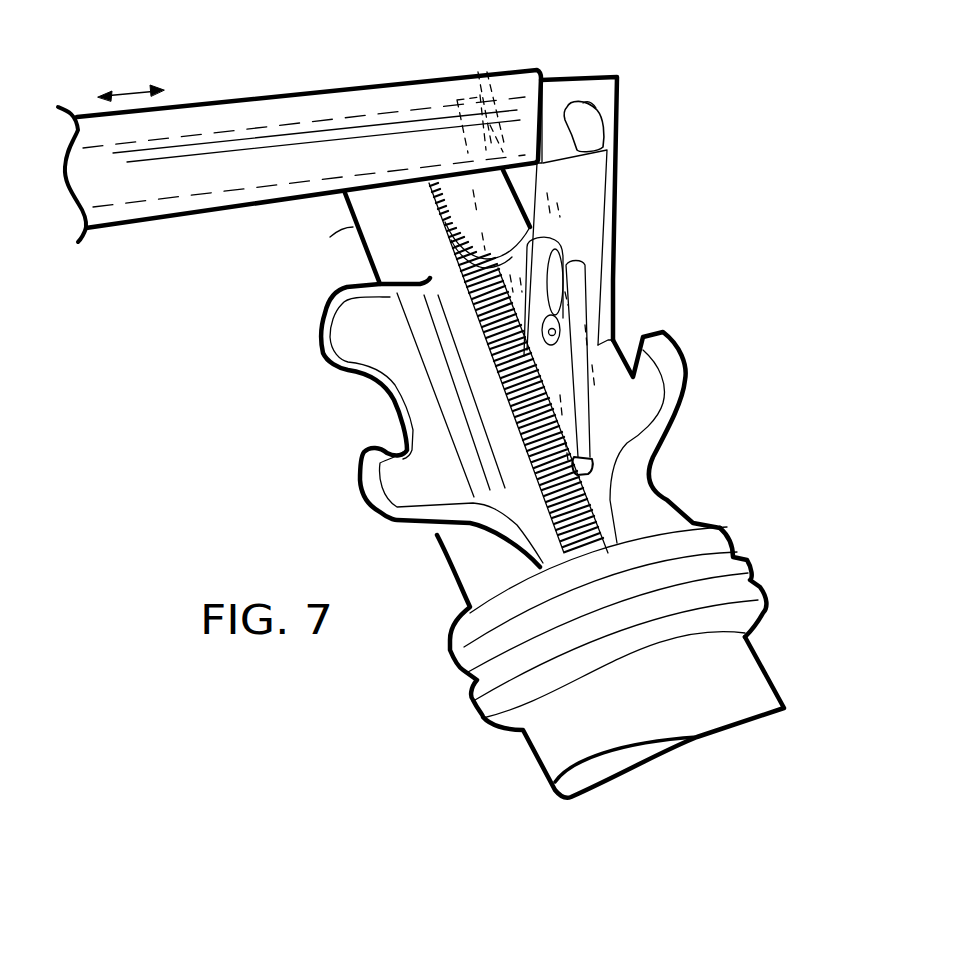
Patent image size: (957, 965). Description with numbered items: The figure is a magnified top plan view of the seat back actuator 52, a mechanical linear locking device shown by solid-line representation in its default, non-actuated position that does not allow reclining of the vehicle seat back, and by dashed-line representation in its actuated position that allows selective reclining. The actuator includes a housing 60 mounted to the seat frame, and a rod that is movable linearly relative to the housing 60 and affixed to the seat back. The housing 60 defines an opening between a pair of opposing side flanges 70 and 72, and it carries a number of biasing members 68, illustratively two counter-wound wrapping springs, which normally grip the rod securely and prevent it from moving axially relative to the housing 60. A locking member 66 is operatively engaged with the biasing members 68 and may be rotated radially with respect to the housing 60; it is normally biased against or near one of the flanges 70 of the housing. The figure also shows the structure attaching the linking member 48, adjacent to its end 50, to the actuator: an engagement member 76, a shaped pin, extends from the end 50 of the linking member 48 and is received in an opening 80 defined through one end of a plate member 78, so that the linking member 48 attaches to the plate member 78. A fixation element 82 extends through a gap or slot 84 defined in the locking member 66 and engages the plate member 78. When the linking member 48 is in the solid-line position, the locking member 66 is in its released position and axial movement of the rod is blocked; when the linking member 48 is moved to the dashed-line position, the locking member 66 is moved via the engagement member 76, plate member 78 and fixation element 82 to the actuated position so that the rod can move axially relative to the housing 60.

The linking member 48 is at (278, 94).
The end of linking member 50 is at (540, 77).
The seat back actuator 52 is at (780, 664).
The housing 60 is at (352, 232).
The locking member 66 is at (460, 312).
The biasing members 68 is at (605, 525).
The side flange 70 is at (672, 335).
The side flange 72 is at (320, 334).
The engagement member 76 is at (606, 131).
The plate member 78 is at (487, 80).
The opening 80 is at (585, 103).
The fixation element 82 is at (548, 328).
The slot 84 is at (566, 267).